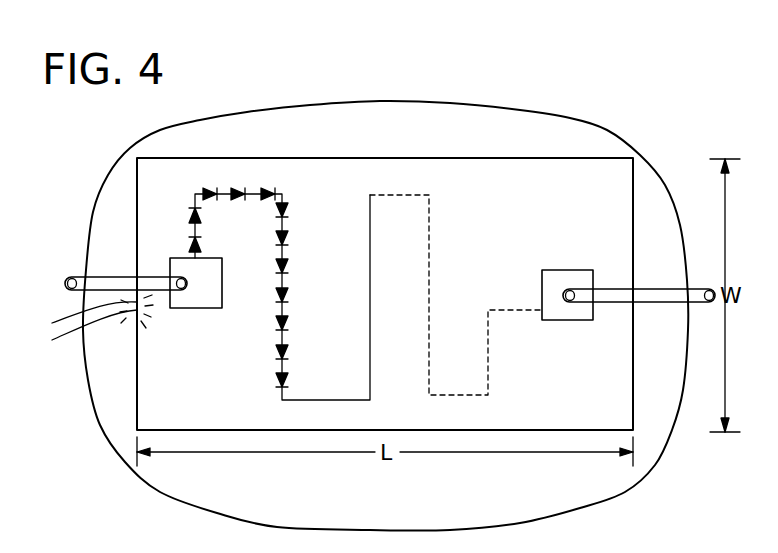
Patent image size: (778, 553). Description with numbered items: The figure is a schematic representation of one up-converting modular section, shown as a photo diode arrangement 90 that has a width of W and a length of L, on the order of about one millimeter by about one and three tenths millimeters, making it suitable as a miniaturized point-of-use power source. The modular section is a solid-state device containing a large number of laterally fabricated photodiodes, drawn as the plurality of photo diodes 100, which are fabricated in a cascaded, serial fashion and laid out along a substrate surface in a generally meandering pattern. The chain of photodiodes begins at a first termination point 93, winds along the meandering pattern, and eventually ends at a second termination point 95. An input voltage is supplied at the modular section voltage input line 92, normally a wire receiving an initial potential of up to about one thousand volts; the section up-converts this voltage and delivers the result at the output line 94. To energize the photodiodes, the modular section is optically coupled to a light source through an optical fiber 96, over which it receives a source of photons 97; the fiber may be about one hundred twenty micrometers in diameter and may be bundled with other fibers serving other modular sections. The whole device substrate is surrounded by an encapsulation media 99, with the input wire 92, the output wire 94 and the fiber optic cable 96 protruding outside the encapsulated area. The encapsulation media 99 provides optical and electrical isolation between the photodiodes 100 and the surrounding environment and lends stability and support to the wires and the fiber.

The photo diode arrangement 90 is at (385, 301).
The modular section voltage input line 92 is at (75, 275).
The first termination point 93 is at (210, 308).
The modular section voltage output line 94 is at (695, 288).
The second termination point 95 is at (575, 320).
The optical fiber 96 is at (67, 327).
The source of photons 97 is at (155, 322).
The encapsulation media 99 is at (606, 131).
The plurality of photo diodes 100 is at (300, 231).